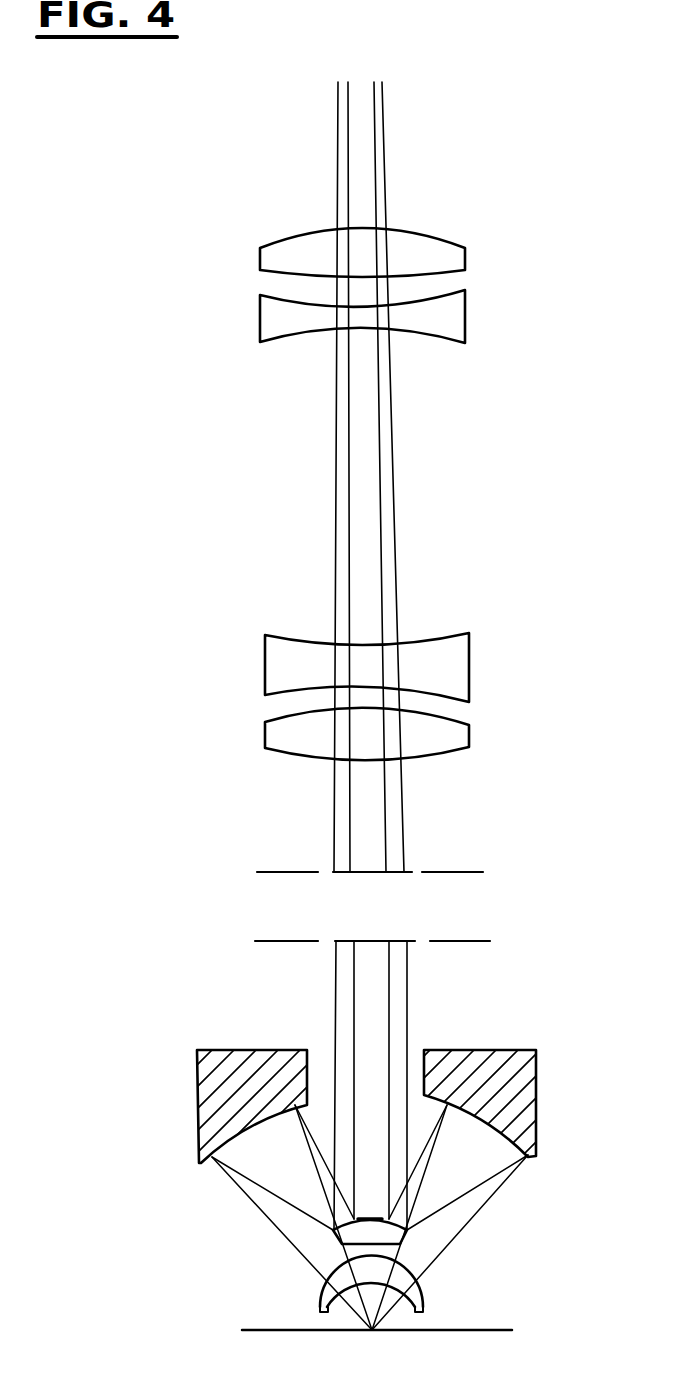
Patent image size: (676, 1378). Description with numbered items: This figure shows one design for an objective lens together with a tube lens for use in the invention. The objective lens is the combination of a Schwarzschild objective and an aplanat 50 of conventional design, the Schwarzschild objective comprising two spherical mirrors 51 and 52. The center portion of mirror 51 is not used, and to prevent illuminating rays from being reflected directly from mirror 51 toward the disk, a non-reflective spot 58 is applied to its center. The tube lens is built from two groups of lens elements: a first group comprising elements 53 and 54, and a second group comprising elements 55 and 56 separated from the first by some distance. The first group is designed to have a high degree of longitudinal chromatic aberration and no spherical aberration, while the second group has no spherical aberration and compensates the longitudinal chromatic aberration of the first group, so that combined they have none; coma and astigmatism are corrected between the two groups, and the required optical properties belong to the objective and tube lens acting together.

The aplanat 50 is at (423, 1304).
The mirror 51 is at (405, 1237).
The mirror 52 is at (536, 1114).
The lens element 53 is at (469, 736).
The lens element 54 is at (469, 668).
The lens element 55 is at (468, 318).
The lens element 56 is at (466, 256).
The non-reflective spot 58 is at (368, 1203).